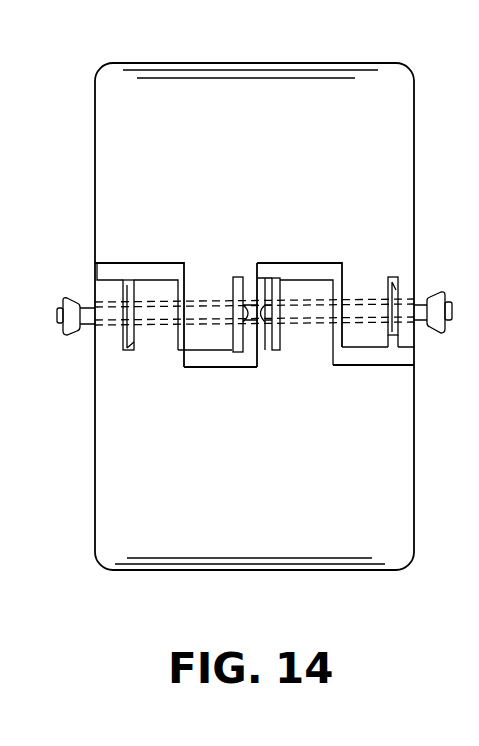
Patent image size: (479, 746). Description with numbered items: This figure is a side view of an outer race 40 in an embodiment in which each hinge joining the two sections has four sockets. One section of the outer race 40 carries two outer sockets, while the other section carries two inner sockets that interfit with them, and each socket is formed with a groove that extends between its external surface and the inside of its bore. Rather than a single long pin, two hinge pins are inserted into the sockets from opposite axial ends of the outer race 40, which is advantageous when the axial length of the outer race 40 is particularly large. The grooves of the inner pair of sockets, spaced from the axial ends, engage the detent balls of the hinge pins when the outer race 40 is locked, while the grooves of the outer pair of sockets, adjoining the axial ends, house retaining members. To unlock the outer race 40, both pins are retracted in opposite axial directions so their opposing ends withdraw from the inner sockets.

The outer race 40 is at (417, 78).